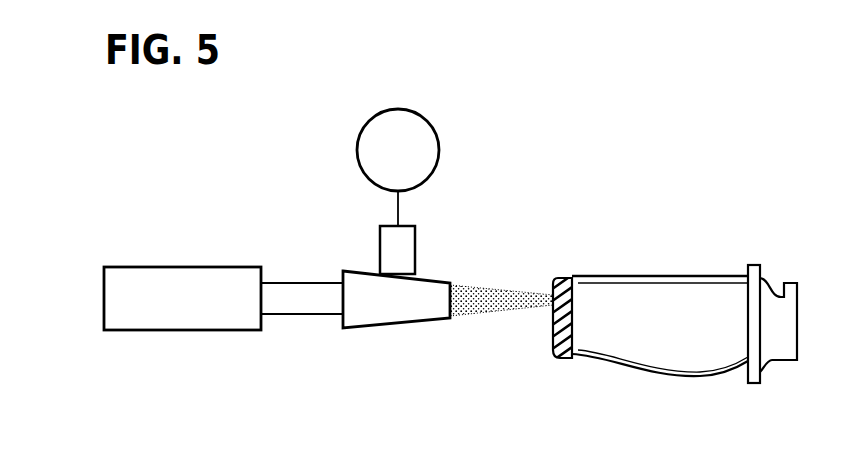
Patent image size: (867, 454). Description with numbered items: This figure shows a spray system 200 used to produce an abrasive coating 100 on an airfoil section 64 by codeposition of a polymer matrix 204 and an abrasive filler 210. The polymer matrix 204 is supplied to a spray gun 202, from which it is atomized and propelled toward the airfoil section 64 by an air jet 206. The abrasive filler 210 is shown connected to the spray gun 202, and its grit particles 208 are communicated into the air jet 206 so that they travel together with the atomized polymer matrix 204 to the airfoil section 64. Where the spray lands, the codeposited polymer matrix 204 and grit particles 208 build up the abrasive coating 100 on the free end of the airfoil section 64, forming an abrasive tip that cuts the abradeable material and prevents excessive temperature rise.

The spray system 200 is at (253, 190).
The polymer matrix 204 is at (199, 306).
The spray gun 202 is at (388, 326).
The abrasive filler 210 is at (414, 160).
The grit particles 208 is at (479, 288).
The air jet 206 is at (507, 313).
The abrasive coating 100 is at (550, 340).
The airfoil section 64 is at (729, 248).